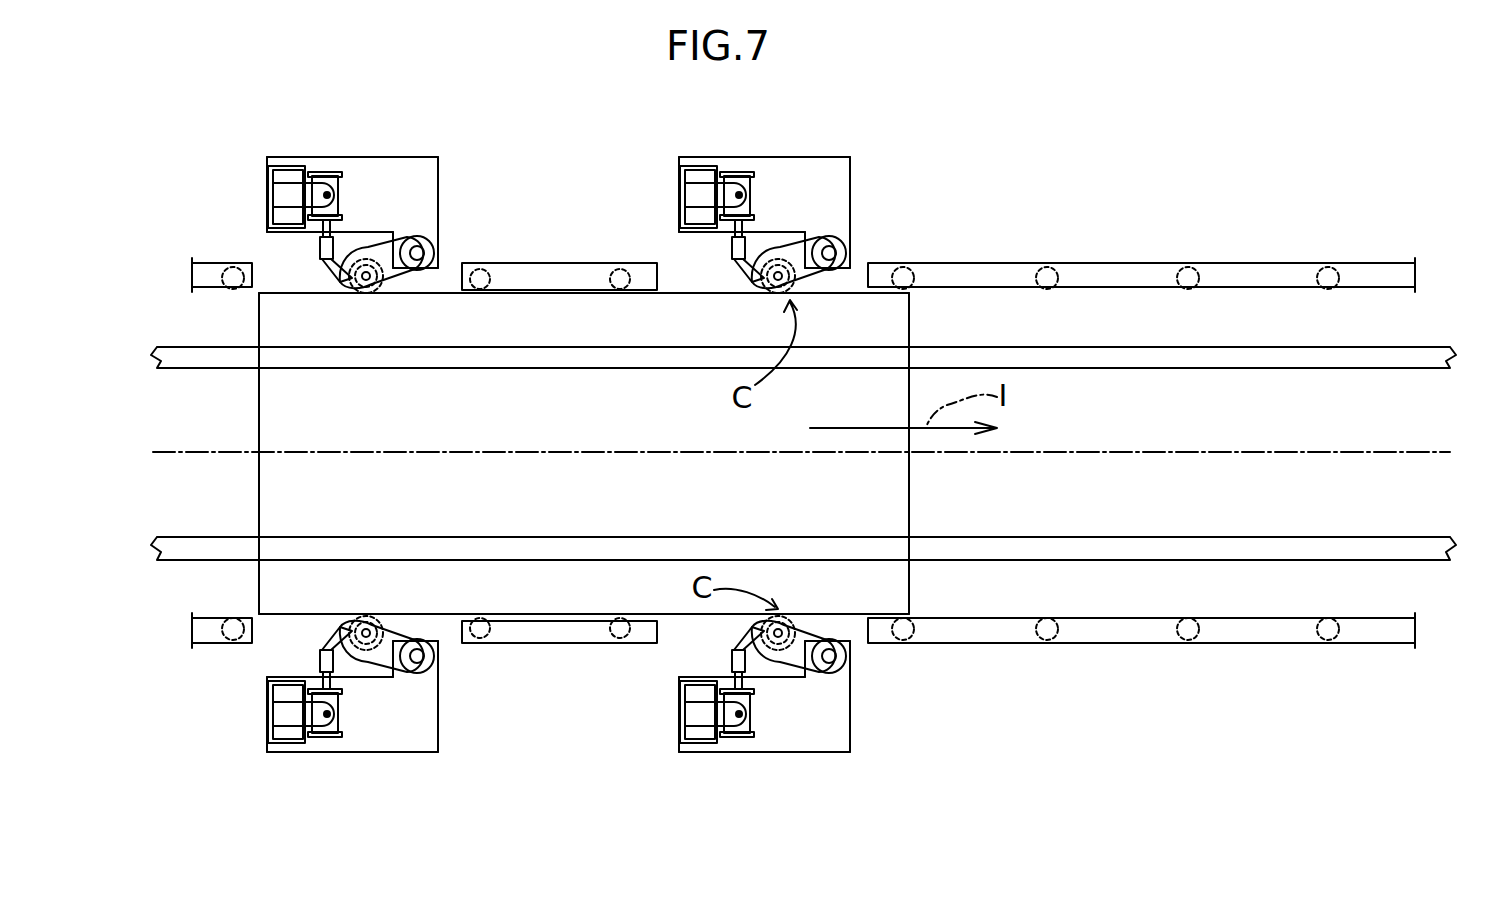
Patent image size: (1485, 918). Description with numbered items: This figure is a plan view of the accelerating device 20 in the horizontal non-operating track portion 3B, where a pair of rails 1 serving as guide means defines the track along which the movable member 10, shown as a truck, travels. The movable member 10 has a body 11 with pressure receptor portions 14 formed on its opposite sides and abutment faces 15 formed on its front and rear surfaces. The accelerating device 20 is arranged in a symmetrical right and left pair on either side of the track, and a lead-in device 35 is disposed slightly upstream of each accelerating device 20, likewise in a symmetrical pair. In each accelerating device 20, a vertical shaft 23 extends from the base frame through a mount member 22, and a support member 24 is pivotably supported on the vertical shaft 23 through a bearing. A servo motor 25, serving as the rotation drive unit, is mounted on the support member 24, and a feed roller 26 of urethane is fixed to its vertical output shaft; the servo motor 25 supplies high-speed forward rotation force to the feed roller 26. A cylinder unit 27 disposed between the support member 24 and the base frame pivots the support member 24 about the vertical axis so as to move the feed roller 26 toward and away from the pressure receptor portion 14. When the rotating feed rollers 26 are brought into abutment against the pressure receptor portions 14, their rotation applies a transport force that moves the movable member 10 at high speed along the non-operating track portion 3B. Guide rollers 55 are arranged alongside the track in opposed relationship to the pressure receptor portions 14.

The rails 1 is at (1140, 540).
The non-operating track portion 3B is at (1350, 452).
The movable member 10 is at (532, 590).
The body 11 is at (280, 412).
The pressure receptor portion 14 is at (562, 295).
The abutment face 15 is at (259, 477).
The accelerating device 20 is at (766, 147).
The mount member 22 is at (412, 172).
The vertical shaft 23 is at (423, 248).
The support member 24 is at (398, 280).
The servo motor 25 is at (366, 282).
The feed roller 26 is at (345, 283).
The cylinder unit 27 is at (322, 166).
The lead-in device 35 is at (367, 146).
The guide rollers 55 is at (1192, 287).